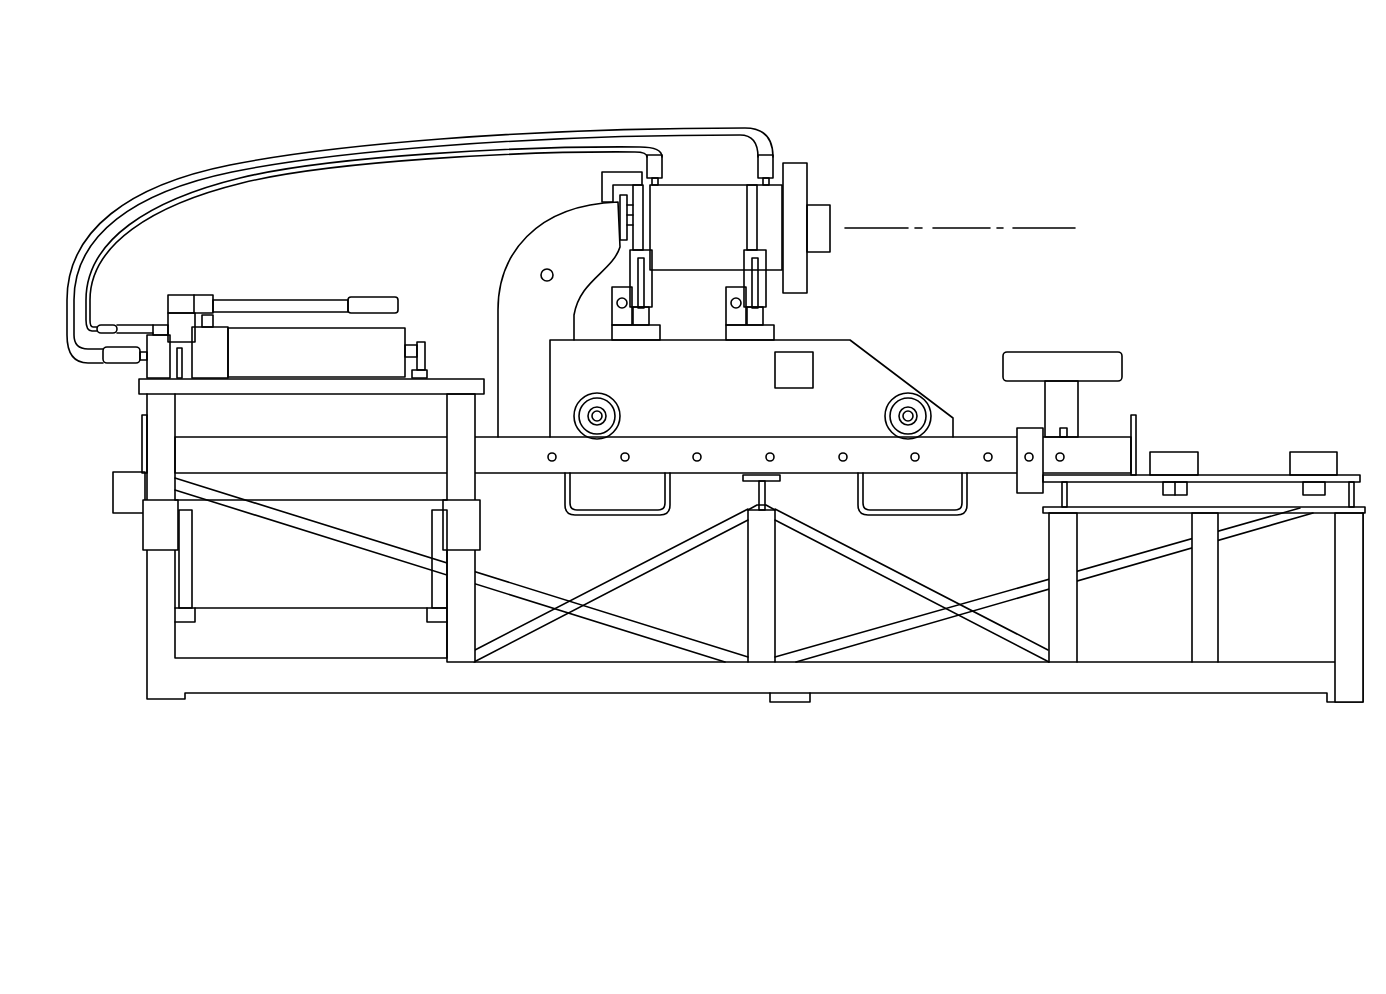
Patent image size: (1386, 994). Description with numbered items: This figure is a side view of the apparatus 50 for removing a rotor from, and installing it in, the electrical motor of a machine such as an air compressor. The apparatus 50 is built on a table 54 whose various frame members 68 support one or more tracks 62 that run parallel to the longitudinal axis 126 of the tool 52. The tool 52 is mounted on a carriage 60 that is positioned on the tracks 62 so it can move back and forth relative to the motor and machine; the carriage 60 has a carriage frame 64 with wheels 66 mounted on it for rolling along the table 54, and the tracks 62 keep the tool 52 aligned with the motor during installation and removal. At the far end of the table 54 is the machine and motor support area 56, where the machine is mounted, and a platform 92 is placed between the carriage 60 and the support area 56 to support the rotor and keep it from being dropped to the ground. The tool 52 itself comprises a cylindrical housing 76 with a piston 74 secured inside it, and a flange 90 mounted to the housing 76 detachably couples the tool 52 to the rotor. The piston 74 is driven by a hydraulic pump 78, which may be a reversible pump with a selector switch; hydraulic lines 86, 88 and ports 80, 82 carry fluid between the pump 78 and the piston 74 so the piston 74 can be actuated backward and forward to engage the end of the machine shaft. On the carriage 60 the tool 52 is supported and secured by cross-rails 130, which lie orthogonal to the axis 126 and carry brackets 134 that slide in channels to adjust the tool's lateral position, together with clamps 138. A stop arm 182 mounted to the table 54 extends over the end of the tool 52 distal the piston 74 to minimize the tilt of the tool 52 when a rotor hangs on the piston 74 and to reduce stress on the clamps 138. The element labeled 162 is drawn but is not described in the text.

The apparatus 50 is at (1102, 146).
The tool 52 is at (812, 102).
The table 54 is at (264, 716).
The machine and motor support area 56 is at (1270, 392).
The carriage 60 is at (880, 330).
The tracks 62 is at (980, 437).
The carriage frame 64 is at (705, 418).
The wheels 66 is at (884, 414).
The frame members 68 is at (462, 632).
The piston 74 is at (815, 254).
The cylindrical housing 76 is at (715, 246).
The hydraulic pump 78 is at (290, 290).
The port 80 is at (648, 166).
The port 82 is at (775, 156).
The hydraulic line 86 is at (427, 140).
The hydraulic line 88 is at (672, 129).
The flange 90 is at (808, 187).
The platform 92 is at (1068, 352).
The longitudinal axis 126 is at (958, 228).
The cross-rails 130 is at (637, 337).
The brackets 134 is at (650, 287).
The clamps 138 is at (757, 200).
The stop block 162 is at (1313, 452).
The stop arm 182 is at (526, 238).